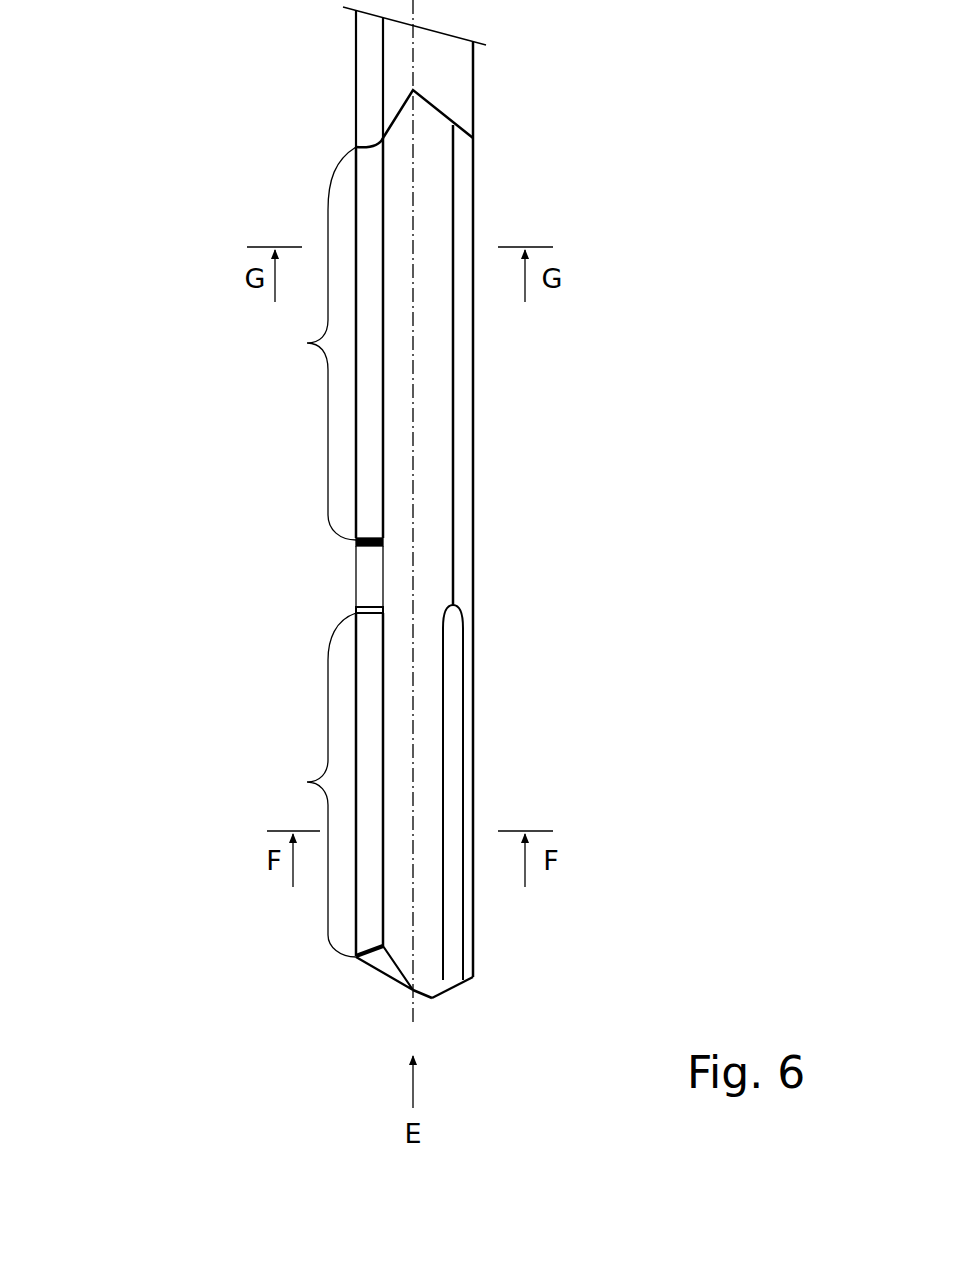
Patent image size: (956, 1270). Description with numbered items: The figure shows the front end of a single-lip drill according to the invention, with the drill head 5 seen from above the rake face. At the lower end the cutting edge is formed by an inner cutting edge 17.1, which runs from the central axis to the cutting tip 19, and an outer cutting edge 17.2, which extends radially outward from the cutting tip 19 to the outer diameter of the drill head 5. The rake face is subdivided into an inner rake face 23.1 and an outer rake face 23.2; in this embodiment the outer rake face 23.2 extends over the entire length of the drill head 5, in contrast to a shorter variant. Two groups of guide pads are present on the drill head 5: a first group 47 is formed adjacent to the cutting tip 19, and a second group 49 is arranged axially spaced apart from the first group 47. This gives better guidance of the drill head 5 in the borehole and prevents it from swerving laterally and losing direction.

The drill head 5 is at (201, 706).
The second group of guide pads 49 is at (307, 343).
The first group of guide pads 47 is at (307, 782).
The inner rake face 23.1 is at (435, 452).
The outer rake face 23.2 is at (463, 562).
The inner cutting edge 17.1 is at (423, 997).
The outer cutting edge 17.2 is at (460, 985).
The cutting tip 19 is at (432, 998).